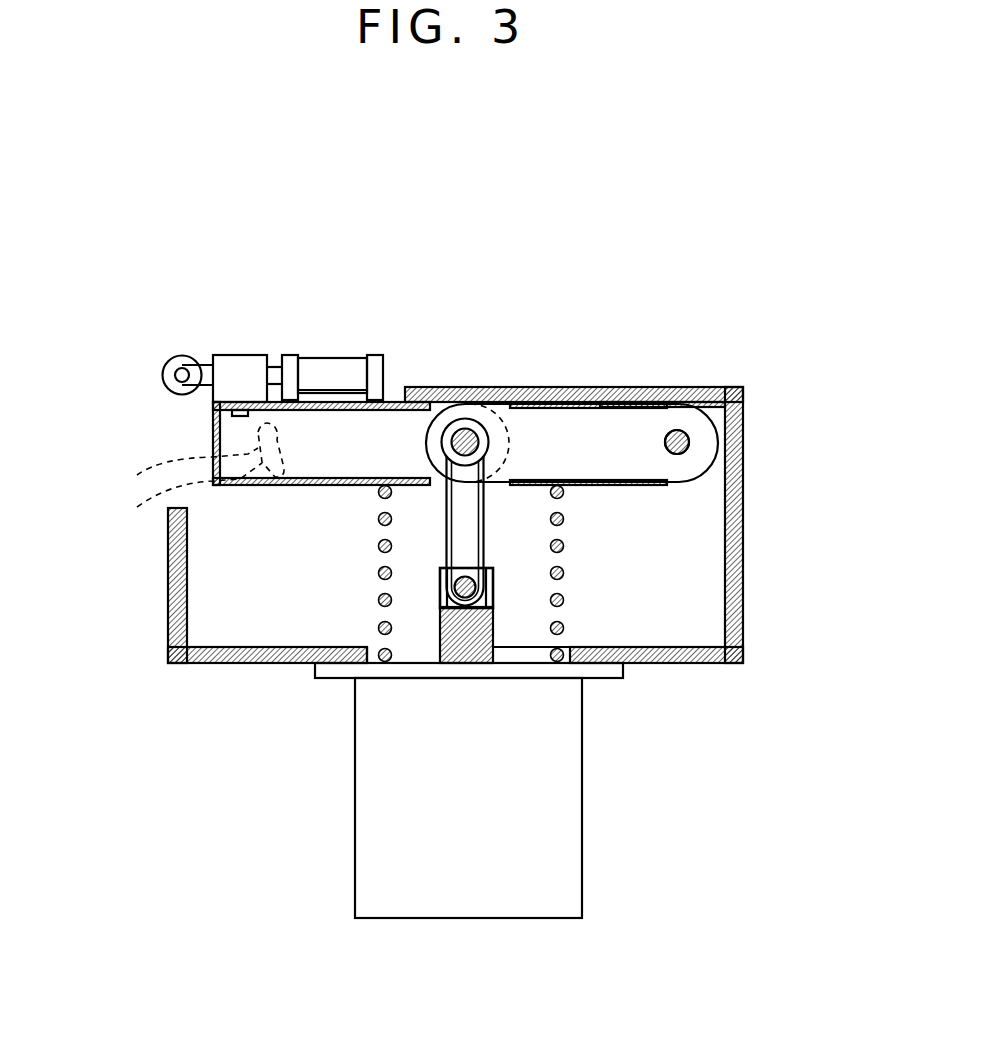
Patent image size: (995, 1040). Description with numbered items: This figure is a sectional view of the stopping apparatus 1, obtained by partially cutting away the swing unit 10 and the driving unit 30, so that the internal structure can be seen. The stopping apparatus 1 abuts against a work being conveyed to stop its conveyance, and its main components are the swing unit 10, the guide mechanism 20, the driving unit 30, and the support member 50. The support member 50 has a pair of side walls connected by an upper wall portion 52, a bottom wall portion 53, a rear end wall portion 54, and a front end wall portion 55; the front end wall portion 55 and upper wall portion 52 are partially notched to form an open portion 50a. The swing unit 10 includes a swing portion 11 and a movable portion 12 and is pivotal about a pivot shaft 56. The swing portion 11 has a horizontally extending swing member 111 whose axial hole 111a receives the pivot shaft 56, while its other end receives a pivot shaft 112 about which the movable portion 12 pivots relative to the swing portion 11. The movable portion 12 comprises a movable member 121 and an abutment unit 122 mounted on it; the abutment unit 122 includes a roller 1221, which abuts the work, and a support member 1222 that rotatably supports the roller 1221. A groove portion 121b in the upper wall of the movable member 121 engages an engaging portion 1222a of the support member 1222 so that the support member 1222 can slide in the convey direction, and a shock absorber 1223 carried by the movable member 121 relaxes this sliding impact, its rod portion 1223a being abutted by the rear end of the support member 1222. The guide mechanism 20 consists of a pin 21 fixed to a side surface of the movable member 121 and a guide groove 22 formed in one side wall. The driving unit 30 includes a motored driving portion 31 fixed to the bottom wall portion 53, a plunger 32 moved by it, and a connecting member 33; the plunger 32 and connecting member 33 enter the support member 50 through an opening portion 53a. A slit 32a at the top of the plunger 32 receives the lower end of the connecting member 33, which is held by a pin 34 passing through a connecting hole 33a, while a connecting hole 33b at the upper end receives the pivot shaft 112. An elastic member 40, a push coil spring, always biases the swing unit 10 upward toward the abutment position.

The stopping apparatus 1 is at (246, 253).
The swing unit 10 is at (621, 448).
The swing portion 11 is at (643, 494).
The swing member 111 is at (683, 431).
The axial hole 111a is at (690, 440).
The pivot shaft 112 is at (467, 438).
The movable portion 12 is at (388, 393).
The movable member 121 is at (337, 486).
The groove portion 121b is at (268, 412).
The abutment unit 122 is at (278, 335).
The roller 1221 is at (172, 353).
The support member 1222 is at (220, 355).
The engaging portion 1222a is at (215, 417).
The shock absorber 1223 is at (352, 354).
The rod portion 1223a is at (276, 355).
The guide mechanism 20 is at (165, 479).
The pin 21 is at (194, 460).
The guide groove 22 is at (100, 458).
The driving unit 30 is at (434, 671).
The driving portion 31 is at (562, 850).
The plunger 32 is at (494, 622).
The slit 32a is at (447, 570).
The connecting member 33 is at (478, 543).
The connecting hole 33a is at (448, 594).
The connecting hole 33b is at (480, 441).
The pin 34 is at (492, 577).
The elastic member 40 is at (362, 590).
The support member 50 is at (452, 551).
The open portion 50a is at (163, 416).
The upper wall portion 52 is at (613, 386).
The bottom wall portion 53 is at (665, 665).
The opening portion 53a is at (522, 655).
The rear end wall portion 54 is at (743, 518).
The front end wall portion 55 is at (168, 608).
The pivot shaft 56 is at (688, 434).